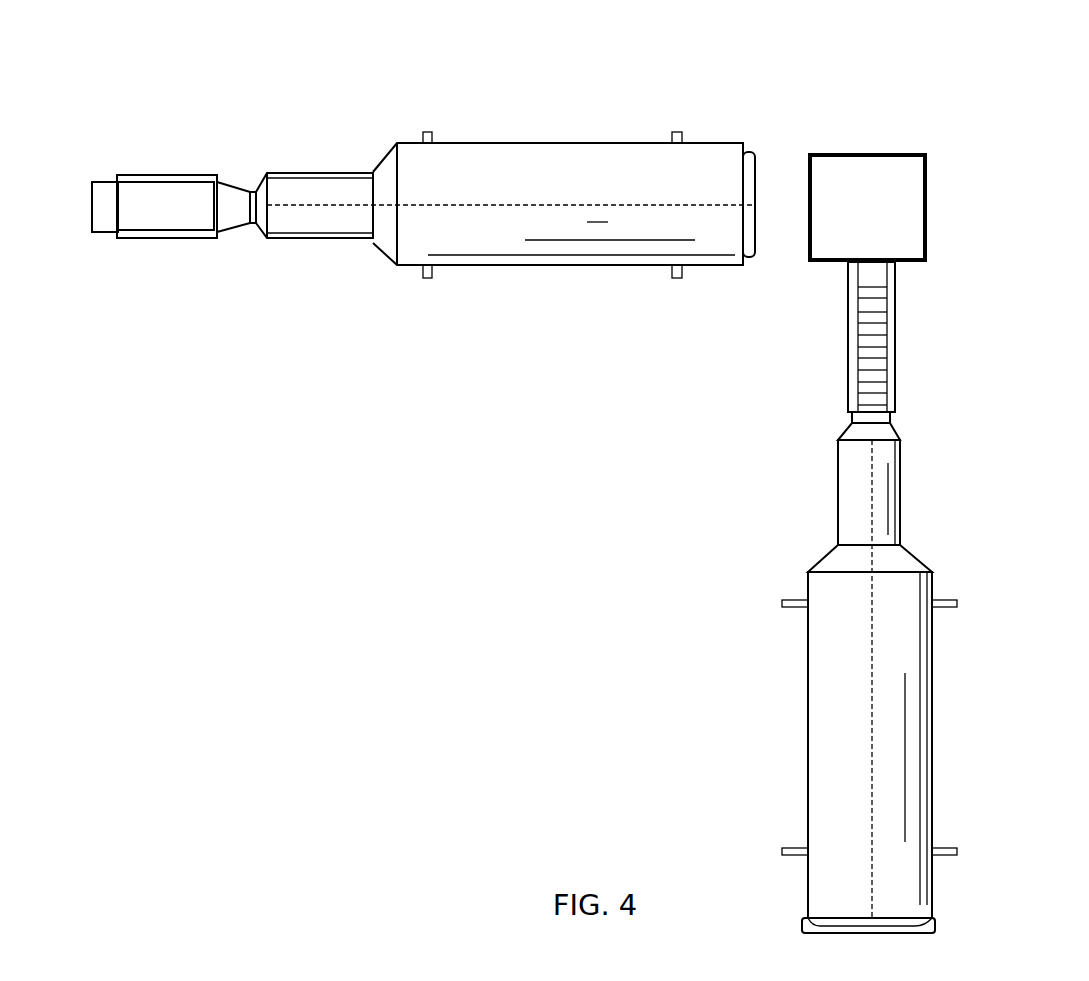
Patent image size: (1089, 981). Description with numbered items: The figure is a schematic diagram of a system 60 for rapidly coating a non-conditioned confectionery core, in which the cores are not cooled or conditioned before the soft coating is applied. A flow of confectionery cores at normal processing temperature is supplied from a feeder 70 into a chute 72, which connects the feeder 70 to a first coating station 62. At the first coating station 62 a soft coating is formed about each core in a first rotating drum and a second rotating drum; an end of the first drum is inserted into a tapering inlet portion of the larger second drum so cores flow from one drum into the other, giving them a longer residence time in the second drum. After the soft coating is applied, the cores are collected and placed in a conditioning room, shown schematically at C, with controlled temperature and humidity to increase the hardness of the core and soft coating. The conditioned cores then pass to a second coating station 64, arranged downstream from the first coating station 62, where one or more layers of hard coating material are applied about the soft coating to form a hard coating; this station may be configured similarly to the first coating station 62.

The system 60 is at (880, 53).
The first coating station 62 is at (373, 133).
The second coating station 64 is at (957, 553).
The feeder 70 is at (160, 197).
The chute 72 is at (232, 190).